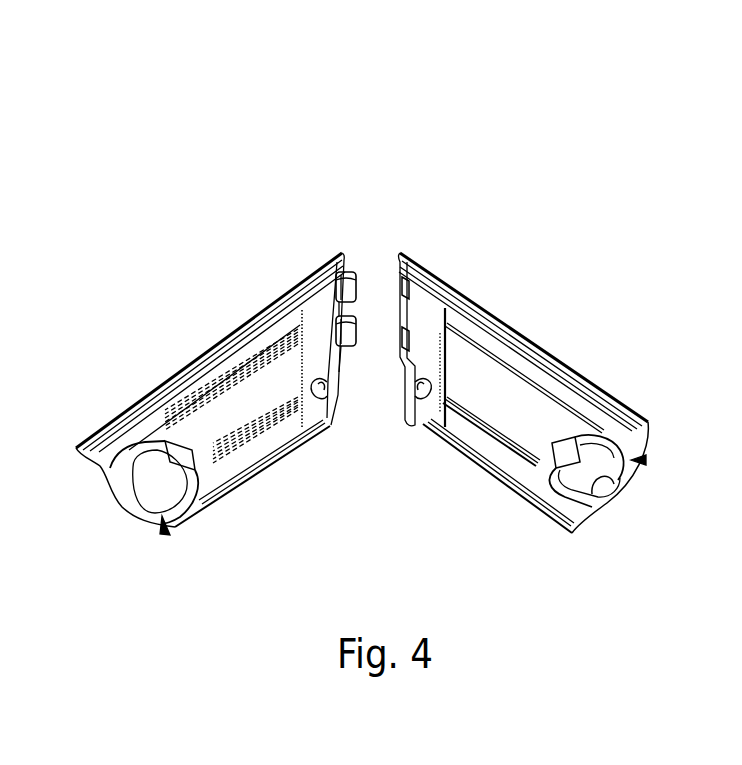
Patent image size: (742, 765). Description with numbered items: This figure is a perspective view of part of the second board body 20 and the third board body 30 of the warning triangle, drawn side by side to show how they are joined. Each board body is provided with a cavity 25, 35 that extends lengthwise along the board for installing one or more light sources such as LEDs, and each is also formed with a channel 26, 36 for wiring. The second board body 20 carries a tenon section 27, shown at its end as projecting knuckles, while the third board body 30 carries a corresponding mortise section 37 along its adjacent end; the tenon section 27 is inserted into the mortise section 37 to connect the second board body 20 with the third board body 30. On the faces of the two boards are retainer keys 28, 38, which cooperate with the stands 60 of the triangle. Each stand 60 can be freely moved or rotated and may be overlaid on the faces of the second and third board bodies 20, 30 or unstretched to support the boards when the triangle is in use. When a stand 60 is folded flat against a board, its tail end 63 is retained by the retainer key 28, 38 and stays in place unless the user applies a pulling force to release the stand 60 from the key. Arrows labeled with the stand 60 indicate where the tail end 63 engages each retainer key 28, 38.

The second board body 20 is at (215, 327).
The cavity 25 is at (188, 387).
The channel 26 is at (238, 457).
The tenon section 27 is at (354, 288).
The retainer key 28 is at (183, 435).
The third board body 30 is at (548, 333).
The cavity 35 is at (486, 330).
The channel 36 is at (490, 430).
The mortise section 37 is at (402, 333).
The retainer key 38 is at (563, 450).
The stand 60 is at (166, 535).
The tail end 63 is at (203, 510).